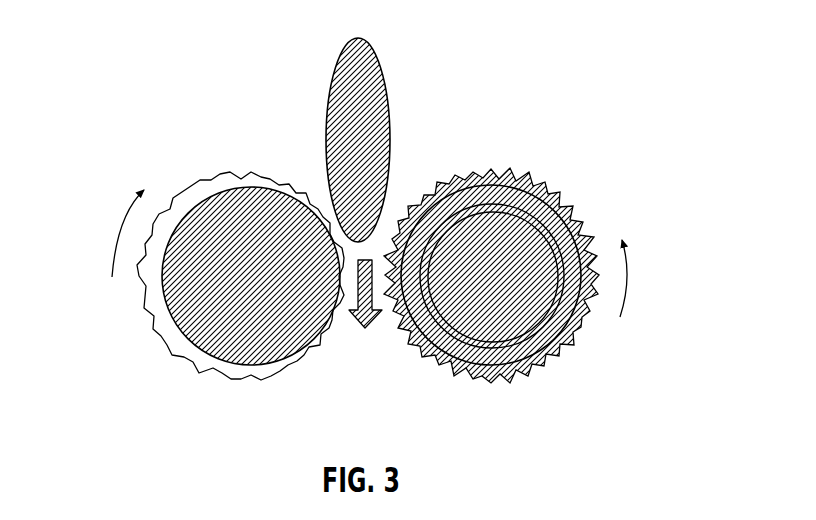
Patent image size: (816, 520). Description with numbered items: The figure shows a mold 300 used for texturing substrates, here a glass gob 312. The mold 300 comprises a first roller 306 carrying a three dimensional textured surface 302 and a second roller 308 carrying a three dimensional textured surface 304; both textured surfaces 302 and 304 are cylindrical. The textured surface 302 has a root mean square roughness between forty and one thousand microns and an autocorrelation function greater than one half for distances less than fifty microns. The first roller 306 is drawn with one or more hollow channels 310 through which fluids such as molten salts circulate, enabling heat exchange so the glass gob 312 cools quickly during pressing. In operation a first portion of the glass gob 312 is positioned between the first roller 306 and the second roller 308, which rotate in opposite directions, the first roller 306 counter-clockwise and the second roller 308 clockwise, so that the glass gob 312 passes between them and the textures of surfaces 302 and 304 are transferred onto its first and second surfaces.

The mold 300 is at (157, 77).
The textured surface 302 is at (553, 187).
The textured surface 304 is at (233, 175).
The first roller 306 is at (492, 280).
The second roller 308 is at (267, 277).
The hollow channel 310 is at (493, 350).
The glass gob 312 is at (370, 43).